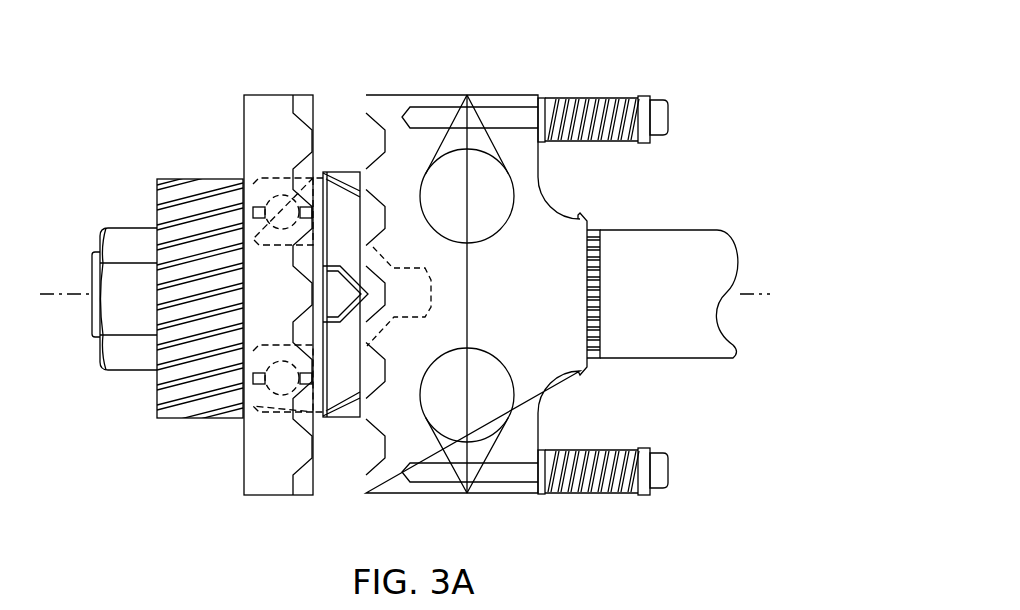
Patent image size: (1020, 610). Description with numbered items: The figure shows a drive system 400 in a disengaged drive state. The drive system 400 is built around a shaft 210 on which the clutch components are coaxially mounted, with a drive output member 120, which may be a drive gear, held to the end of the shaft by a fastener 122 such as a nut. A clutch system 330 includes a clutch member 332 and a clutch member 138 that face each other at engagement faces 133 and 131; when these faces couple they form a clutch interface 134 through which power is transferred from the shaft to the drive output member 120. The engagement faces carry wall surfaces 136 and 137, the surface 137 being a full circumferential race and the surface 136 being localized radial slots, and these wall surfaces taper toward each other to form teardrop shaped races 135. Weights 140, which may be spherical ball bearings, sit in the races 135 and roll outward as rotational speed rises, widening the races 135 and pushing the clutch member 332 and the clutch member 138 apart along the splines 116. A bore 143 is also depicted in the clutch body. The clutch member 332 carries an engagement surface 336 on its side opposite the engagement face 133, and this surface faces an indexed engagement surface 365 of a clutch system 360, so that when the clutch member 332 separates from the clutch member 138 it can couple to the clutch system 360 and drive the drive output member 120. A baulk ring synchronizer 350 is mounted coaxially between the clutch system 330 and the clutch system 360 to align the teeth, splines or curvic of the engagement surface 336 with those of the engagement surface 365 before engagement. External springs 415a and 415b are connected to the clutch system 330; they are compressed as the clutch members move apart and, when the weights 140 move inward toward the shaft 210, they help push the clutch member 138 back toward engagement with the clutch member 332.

The drive system 400 is at (719, 92).
The fastener 122 is at (118, 372).
The drive output member 120 is at (167, 420).
The clutch system 360 is at (256, 92).
The engagement surface 365 is at (306, 158).
The baulk ring synchronizer 350 is at (343, 168).
The clutch system 330 is at (542, 512).
The clutch member 332 is at (378, 494).
The engagement surface 336 is at (375, 137).
The wall surface 136 is at (522, 96).
The clutch member 138 is at (540, 432).
The clutch interface 134 is at (468, 90).
The wall surface 137 is at (440, 133).
The engagement face 133 is at (458, 490).
The races 135 is at (477, 130).
The upper bore 143 is at (472, 244).
The weights 140 is at (490, 369).
The engagement face 131 is at (476, 490).
The external spring 415a is at (610, 96).
The external spring 415b is at (611, 495).
The spline 116 is at (601, 282).
The shaft 210 is at (709, 360).